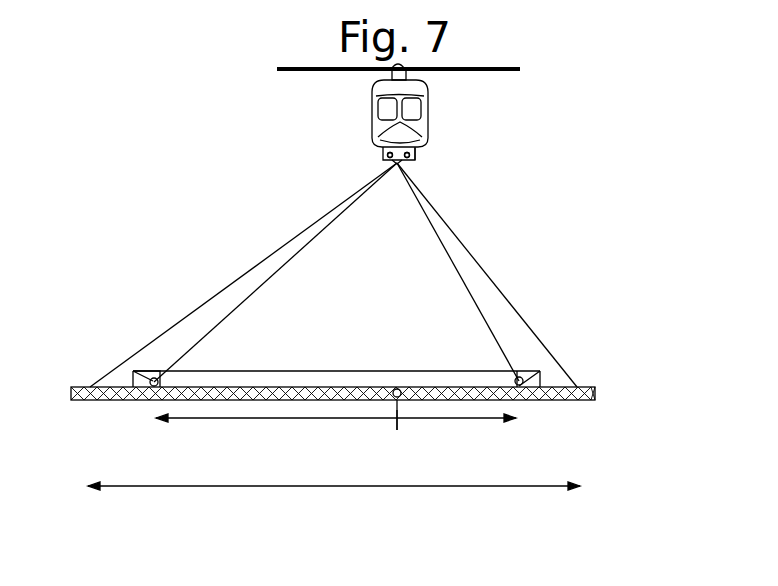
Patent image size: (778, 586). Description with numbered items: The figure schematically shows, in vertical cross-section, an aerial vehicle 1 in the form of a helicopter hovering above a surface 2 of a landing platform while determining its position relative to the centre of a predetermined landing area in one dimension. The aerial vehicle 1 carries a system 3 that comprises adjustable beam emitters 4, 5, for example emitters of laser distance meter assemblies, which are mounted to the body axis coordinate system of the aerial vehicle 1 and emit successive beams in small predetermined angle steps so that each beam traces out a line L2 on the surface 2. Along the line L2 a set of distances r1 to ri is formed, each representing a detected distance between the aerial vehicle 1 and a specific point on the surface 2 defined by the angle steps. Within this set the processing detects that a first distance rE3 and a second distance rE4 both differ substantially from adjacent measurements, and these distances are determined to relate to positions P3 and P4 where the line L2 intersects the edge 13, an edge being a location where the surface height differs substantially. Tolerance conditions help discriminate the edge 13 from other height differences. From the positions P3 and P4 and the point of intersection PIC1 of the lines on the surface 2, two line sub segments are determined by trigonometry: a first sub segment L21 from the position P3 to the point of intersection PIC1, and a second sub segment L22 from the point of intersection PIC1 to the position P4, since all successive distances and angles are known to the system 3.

The aerial vehicle 1 is at (476, 124).
The surface 2 is at (592, 386).
The system 3 is at (419, 150).
The beam emitter 4 is at (391, 163).
The beam emitter 5 is at (414, 161).
The edge 13 is at (128, 371).
The position P3 is at (149, 378).
The position P4 is at (523, 378).
The point of intersection PIC1 is at (372, 392).
The distance r1 is at (205, 293).
The first distance rE3 is at (340, 216).
The second distance rE4 is at (458, 275).
The distance ri is at (450, 228).
The first sub segment of line L2 L21 is at (280, 422).
The second sub segment of line L2 L22 is at (458, 422).
The line L2 is at (340, 490).